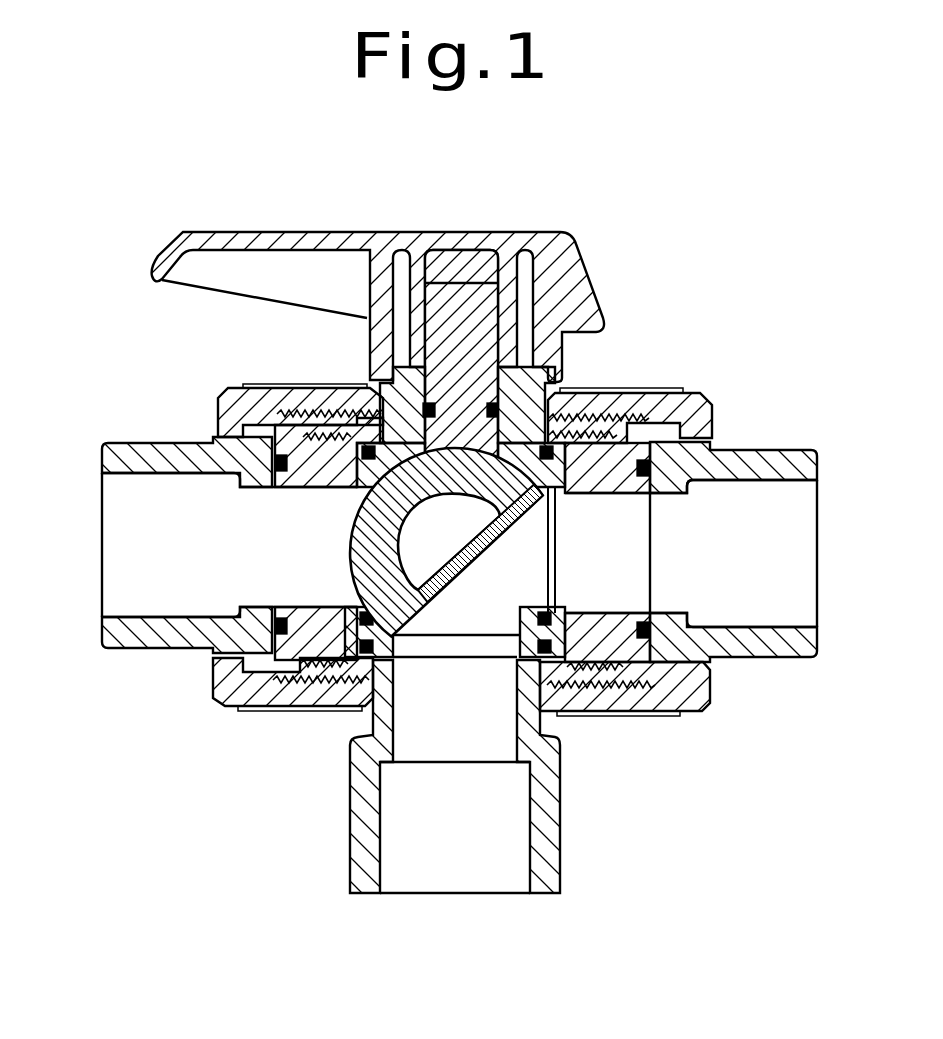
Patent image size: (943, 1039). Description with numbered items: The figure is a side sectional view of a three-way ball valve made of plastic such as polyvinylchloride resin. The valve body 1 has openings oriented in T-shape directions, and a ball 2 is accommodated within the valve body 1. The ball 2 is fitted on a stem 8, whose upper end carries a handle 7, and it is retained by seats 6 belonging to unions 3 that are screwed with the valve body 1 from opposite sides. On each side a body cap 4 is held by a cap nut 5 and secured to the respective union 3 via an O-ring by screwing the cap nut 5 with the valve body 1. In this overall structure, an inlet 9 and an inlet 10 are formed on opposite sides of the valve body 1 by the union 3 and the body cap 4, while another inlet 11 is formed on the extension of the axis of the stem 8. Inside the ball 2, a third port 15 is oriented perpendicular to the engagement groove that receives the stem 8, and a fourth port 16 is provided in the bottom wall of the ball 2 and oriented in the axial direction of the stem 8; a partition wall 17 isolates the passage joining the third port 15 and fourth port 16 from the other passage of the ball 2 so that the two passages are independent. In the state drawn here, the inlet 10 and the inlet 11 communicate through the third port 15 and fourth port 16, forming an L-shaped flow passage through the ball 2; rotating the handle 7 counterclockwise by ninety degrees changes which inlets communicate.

The valve body 1 is at (365, 795).
The ball 2 is at (372, 548).
The union 3 is at (328, 453).
The body cap 4 is at (115, 466).
The cap nut 5 is at (230, 404).
The seat 6 is at (605, 650).
The handle 7 is at (182, 240).
The stem 8 is at (470, 345).
The inlet 9 is at (130, 552).
The inlet 10 is at (790, 556).
The inlet 11 is at (458, 868).
The third port 15 is at (712, 643).
The fourth port 16 is at (478, 640).
The partition wall 17 is at (447, 590).